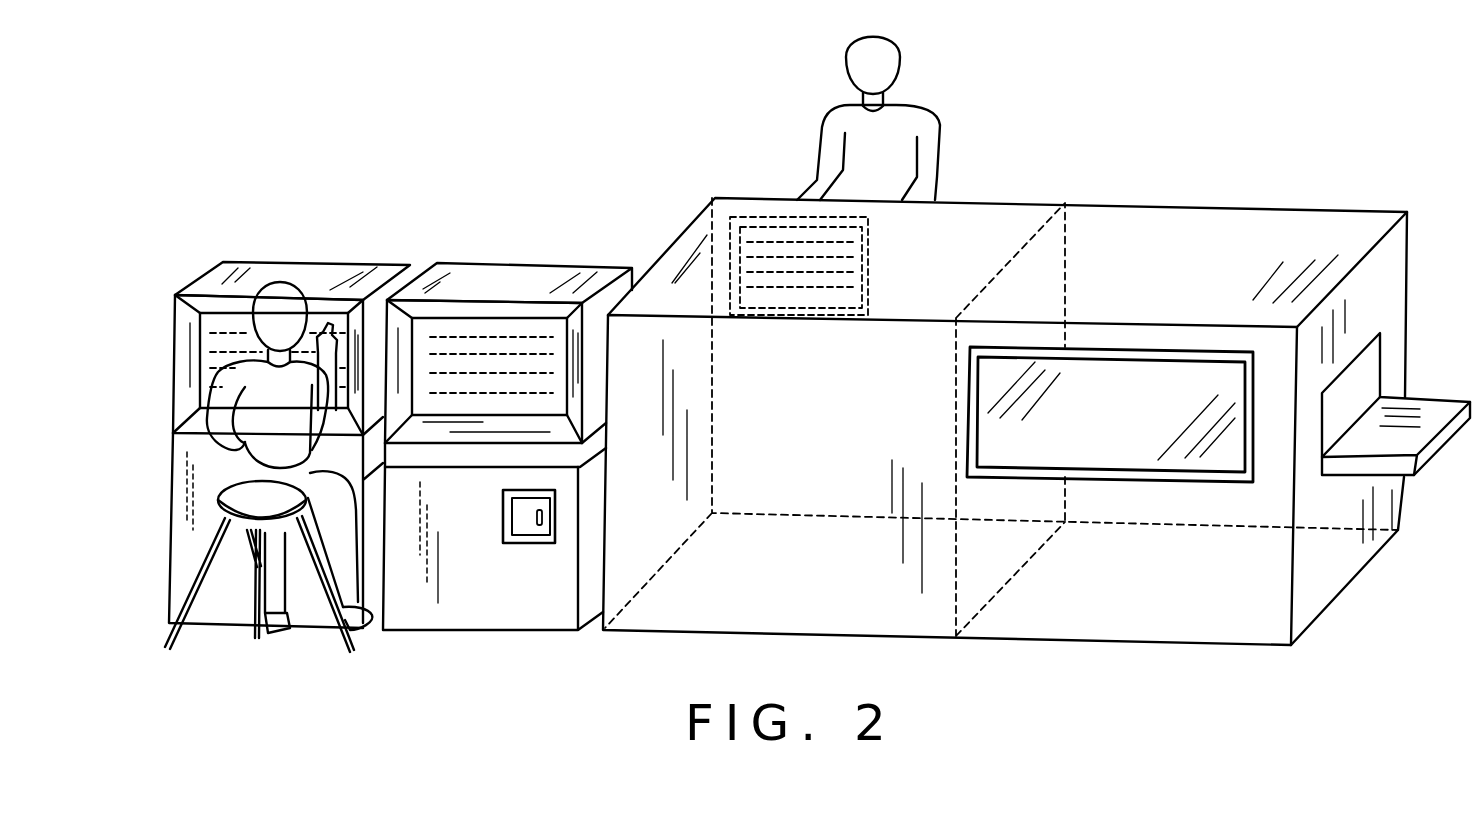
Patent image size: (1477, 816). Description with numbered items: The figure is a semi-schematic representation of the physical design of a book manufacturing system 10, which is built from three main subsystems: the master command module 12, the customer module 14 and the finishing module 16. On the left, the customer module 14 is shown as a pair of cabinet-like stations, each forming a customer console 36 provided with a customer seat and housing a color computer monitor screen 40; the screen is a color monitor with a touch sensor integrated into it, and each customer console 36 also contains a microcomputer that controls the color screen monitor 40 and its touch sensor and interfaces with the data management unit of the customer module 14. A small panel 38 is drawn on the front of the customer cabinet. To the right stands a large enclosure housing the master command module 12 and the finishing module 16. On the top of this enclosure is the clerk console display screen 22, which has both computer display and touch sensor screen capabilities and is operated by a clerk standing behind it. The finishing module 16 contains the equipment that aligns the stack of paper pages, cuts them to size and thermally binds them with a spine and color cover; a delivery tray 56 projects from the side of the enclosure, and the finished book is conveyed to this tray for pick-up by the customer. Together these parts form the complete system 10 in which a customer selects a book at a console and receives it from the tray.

The book manufacturing system 10 is at (1057, 190).
The master command module 12 is at (995, 202).
The customer module 14 is at (462, 630).
The finishing module 16 is at (1193, 207).
The clerk console display screen 22 is at (767, 222).
The customer console 36 is at (170, 403).
The switch box 38 is at (515, 543).
The color computer monitor screen 40 is at (228, 332).
The delivery tray 56 is at (1427, 403).